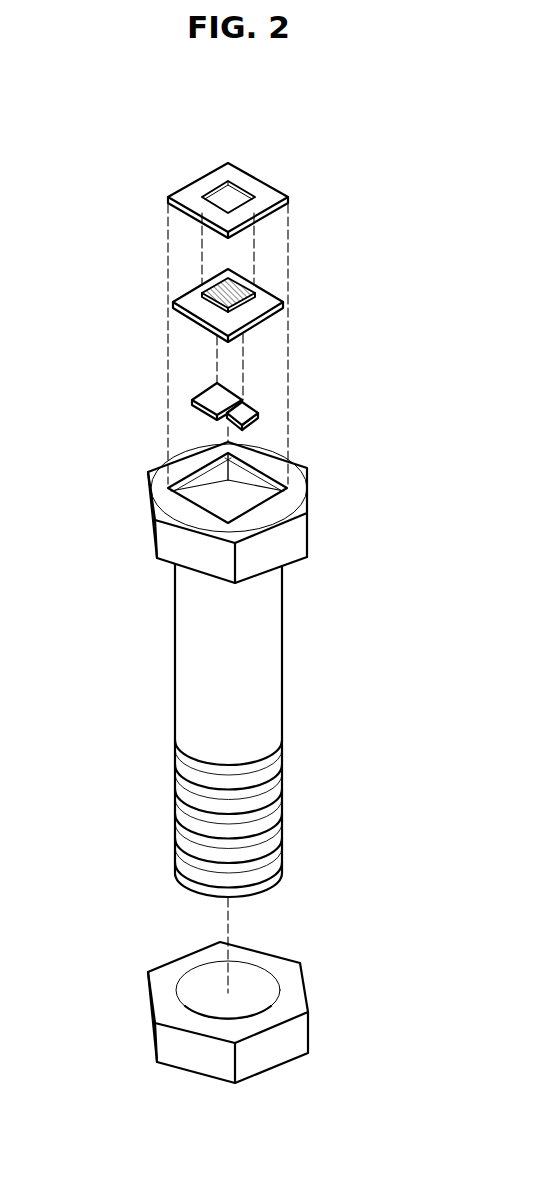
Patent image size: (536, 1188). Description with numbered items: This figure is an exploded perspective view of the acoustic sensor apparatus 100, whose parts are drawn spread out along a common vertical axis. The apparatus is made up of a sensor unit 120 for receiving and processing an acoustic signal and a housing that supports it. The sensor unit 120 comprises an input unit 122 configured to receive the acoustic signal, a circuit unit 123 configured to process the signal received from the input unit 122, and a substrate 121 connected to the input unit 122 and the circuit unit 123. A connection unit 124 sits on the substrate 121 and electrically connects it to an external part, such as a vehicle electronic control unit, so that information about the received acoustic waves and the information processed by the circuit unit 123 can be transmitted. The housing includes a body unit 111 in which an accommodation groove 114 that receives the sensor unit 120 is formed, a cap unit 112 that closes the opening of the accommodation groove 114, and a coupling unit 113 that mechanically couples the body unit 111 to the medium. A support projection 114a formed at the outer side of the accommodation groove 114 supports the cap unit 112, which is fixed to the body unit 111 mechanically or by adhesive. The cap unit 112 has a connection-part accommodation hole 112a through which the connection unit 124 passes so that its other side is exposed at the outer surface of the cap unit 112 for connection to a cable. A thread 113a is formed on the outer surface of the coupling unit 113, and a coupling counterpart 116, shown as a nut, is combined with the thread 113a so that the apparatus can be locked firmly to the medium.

The acoustic sensor apparatus 100 is at (202, 115).
The body unit 111 is at (220, 512).
The cap unit 112 is at (259, 183).
The connection-part accommodation hole 112a is at (230, 196).
The coupling unit 113 is at (272, 730).
The thread 113a is at (265, 775).
The accommodation groove 114 is at (220, 488).
The support projection 114a is at (193, 478).
The coupling counterpart 116 is at (287, 1038).
The sensor unit 120 is at (290, 344).
The substrate 121 is at (268, 297).
The input unit 122 is at (227, 388).
The circuit unit 123 is at (287, 413).
The connection unit 124 is at (252, 283).